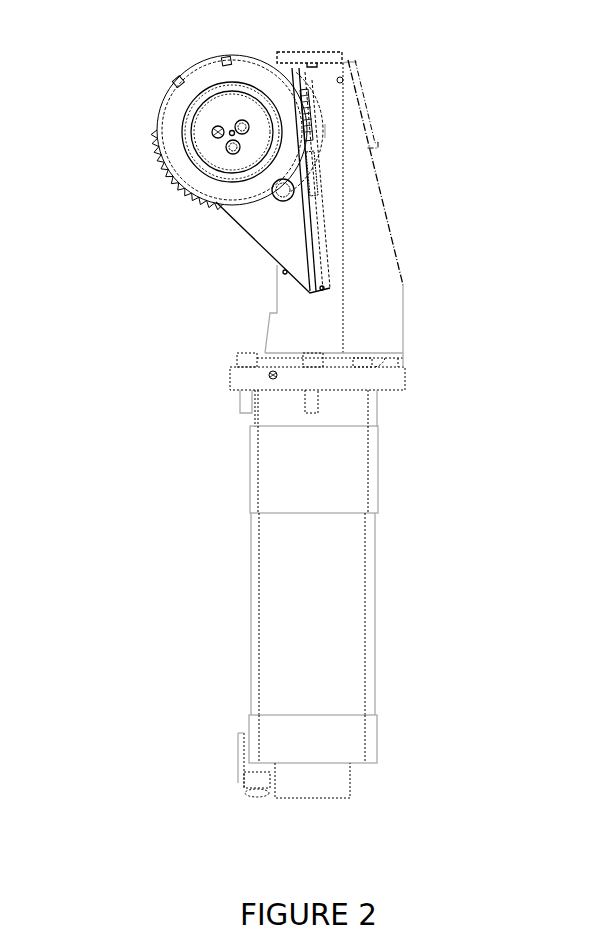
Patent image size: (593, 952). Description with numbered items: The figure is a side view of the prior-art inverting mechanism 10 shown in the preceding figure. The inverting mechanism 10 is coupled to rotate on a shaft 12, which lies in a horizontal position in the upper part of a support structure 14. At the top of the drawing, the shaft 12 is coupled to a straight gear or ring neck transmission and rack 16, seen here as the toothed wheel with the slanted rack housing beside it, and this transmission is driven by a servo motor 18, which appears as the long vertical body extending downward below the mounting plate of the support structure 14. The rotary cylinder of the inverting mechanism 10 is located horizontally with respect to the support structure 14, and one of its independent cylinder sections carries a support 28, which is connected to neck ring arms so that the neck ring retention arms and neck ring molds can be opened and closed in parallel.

The inverting mechanism 10 is at (162, 299).
The shaft 12 is at (217, 130).
The support structure 14 is at (400, 372).
The gear or ring neck transmission and rack 16 is at (335, 152).
The servo motor 18 is at (335, 612).
The support 28 is at (312, 263).